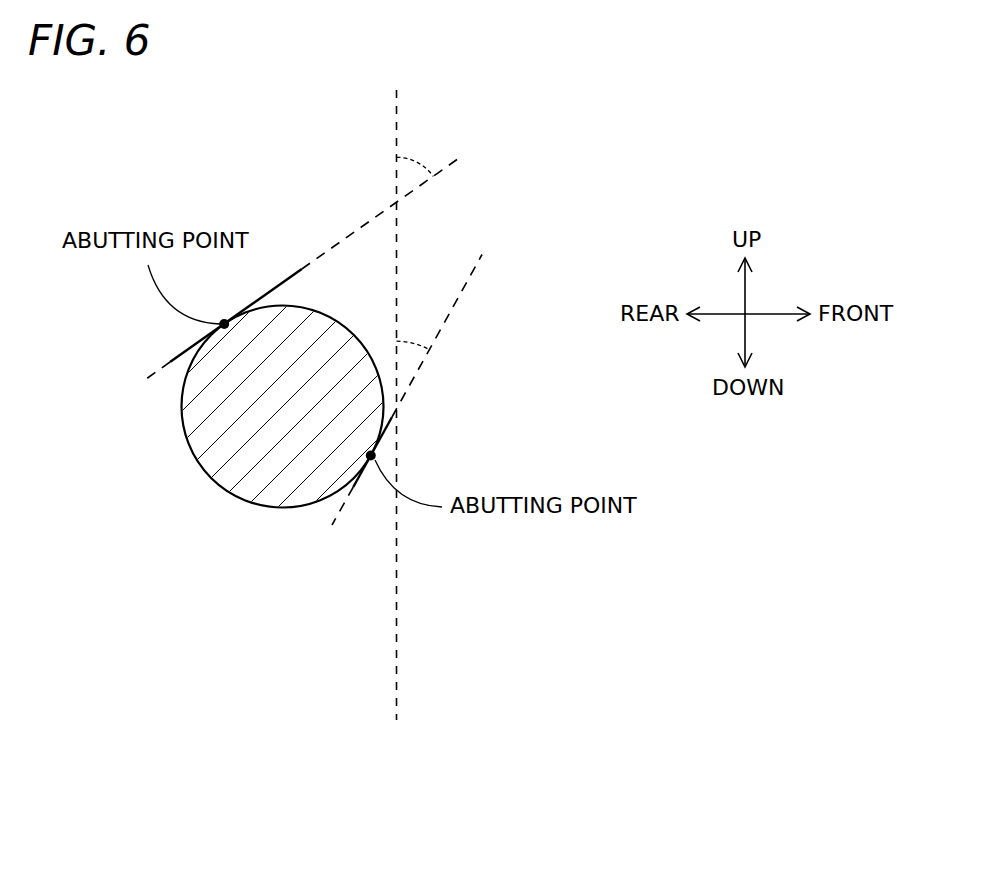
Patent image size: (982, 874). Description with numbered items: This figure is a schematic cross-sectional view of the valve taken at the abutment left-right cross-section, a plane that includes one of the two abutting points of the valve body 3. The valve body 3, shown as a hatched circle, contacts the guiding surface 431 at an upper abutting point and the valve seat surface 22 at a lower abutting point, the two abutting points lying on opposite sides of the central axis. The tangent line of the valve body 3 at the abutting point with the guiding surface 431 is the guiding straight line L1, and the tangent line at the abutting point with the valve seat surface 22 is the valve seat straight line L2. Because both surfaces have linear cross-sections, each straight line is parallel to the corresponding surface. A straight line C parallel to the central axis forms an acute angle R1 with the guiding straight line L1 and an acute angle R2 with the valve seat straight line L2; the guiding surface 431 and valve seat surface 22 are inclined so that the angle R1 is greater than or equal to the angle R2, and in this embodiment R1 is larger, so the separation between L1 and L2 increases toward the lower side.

The valve body 3 is at (184, 431).
The guiding surface 431 is at (187, 350).
The valve seat surface 22 is at (361, 473).
The straight line C is at (396, 118).
The guiding straight line L1 is at (358, 230).
The valve seat straight line L2 is at (463, 288).
The acute angle R1 is at (422, 148).
The acute angle R2 is at (417, 324).